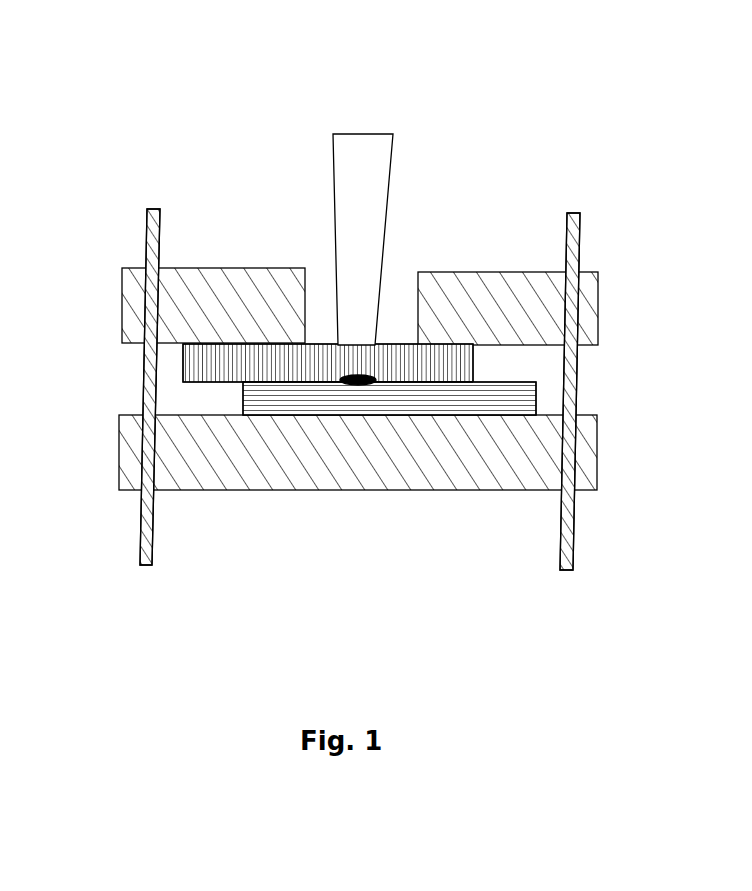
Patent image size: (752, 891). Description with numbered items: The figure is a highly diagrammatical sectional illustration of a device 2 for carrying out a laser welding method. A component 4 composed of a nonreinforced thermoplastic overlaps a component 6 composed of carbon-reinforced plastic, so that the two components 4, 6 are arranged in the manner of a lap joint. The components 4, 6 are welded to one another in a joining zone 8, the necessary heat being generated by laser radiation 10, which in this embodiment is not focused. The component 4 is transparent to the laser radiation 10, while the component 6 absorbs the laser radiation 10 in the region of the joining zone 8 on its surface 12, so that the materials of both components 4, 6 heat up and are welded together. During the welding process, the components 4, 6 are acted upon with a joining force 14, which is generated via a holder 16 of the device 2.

The device 2 is at (561, 80).
The component 4 is at (473, 358).
The component 6 is at (536, 400).
The joining zone 8 is at (337, 381).
The laser radiation 10 is at (373, 228).
The surface 12 is at (355, 382).
The joining force 14 is at (276, 177).
The holder 16 is at (107, 552).